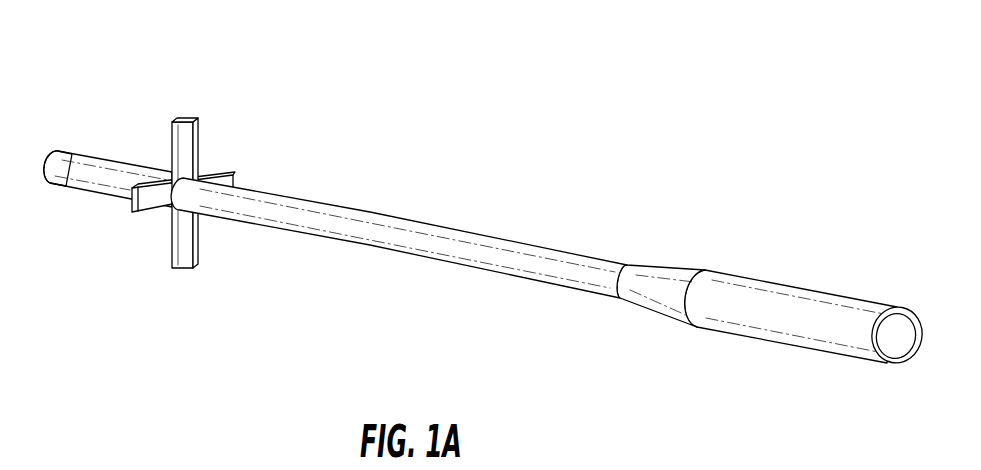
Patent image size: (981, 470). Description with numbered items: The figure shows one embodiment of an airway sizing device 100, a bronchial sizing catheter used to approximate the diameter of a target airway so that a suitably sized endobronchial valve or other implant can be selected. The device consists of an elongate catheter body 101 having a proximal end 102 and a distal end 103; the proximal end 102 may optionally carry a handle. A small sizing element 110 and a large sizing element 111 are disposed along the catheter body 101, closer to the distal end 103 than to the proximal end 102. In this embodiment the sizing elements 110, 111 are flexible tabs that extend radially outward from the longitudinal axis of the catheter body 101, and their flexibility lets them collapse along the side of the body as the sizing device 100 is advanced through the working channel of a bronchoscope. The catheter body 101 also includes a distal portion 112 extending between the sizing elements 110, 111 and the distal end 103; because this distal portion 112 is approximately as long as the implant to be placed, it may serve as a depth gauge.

The airway sizing device 100 is at (472, 195).
The catheter body 101 is at (403, 257).
The proximal end 102 is at (830, 307).
The distal end 103 is at (43, 183).
The small sizing element 110 is at (148, 198).
The large sizing element 111 is at (233, 185).
The distal portion 112 is at (85, 152).